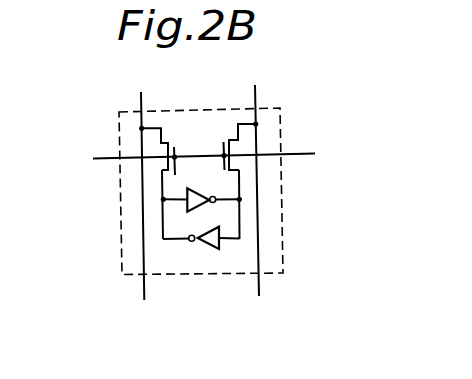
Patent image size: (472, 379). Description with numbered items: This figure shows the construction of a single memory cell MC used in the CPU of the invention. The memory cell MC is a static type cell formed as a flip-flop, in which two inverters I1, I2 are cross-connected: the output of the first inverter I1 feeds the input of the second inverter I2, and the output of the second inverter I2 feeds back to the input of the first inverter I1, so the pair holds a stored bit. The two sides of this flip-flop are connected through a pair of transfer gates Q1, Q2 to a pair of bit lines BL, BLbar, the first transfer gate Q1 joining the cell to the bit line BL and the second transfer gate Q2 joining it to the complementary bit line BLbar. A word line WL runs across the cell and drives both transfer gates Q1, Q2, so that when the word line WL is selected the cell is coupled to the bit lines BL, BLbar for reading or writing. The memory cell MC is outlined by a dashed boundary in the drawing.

The memory cell MC is at (118, 214).
The word line WL is at (223, 151).
The bit line BL is at (143, 211).
The complementary bit line BLbar is at (275, 300).
The transfer gate Q1 is at (162, 146).
The transfer gate Q2 is at (234, 143).
The inverter I1 is at (201, 189).
The inverter I2 is at (201, 251).